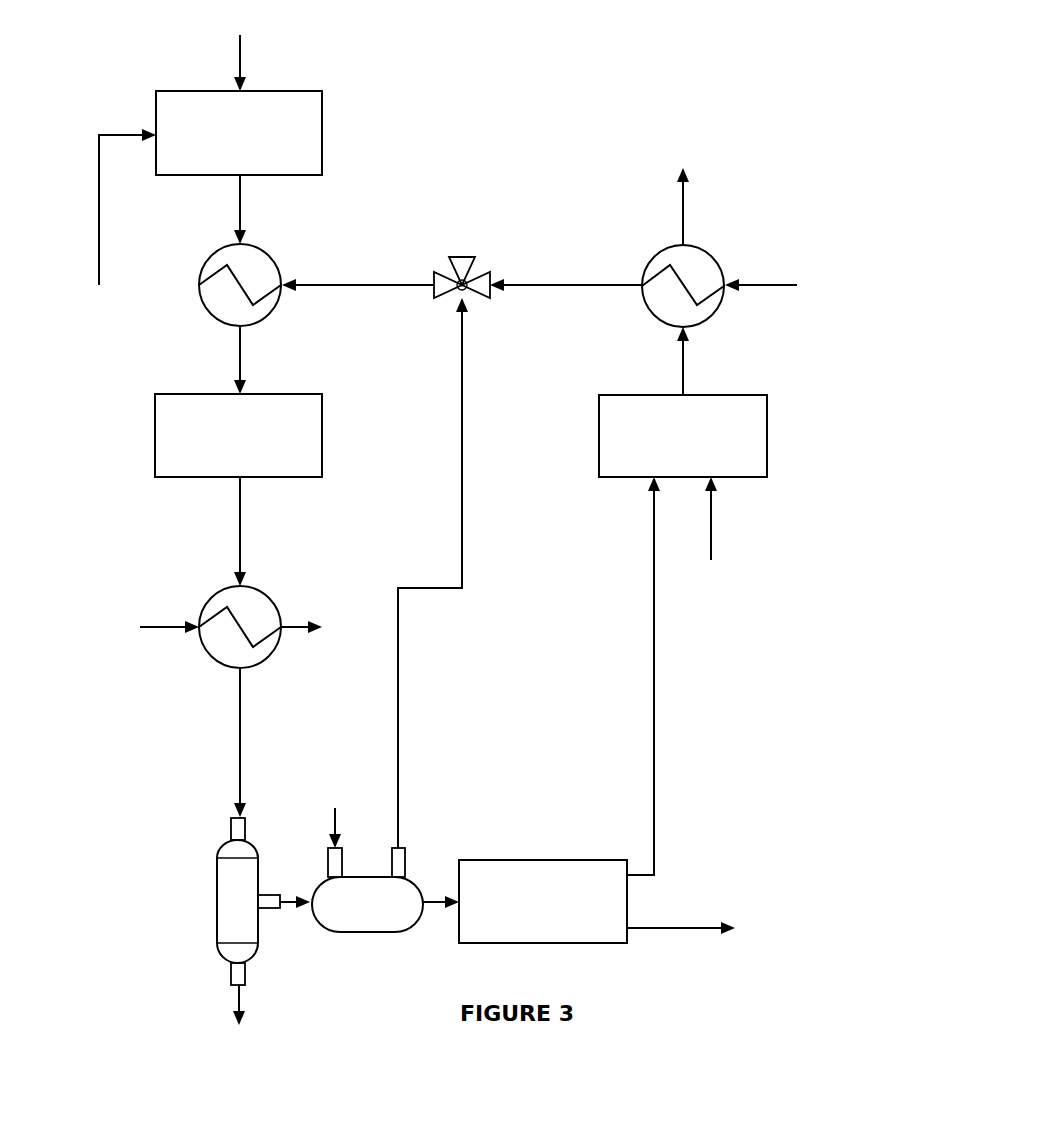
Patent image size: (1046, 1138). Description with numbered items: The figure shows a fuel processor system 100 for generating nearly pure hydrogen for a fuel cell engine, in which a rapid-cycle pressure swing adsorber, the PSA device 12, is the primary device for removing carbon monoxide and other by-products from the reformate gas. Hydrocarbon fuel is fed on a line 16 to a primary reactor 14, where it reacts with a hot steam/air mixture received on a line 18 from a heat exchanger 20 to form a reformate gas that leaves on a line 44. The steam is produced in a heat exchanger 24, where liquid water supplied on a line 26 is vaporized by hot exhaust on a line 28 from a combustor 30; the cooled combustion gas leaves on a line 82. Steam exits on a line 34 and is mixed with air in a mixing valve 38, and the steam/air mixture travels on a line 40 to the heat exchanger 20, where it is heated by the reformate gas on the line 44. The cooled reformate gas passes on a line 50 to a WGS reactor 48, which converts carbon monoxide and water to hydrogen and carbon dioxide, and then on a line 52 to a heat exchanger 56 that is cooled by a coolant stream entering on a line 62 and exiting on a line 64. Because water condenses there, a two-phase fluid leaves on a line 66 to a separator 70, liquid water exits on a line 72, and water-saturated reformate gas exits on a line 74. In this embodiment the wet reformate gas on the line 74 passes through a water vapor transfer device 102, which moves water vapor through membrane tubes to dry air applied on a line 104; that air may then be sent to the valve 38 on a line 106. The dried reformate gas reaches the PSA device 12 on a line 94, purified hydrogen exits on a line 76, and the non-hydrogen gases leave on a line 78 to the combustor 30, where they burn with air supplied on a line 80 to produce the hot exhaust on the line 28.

The fuel processor system 100 is at (466, 104).
The pressure swing adsorber (PSA) device 12 is at (516, 860).
The primary reactor 14 is at (322, 115).
The line 16 is at (240, 49).
The line 18 is at (99, 205).
The heat exchanger 20 is at (212, 318).
The heat exchanger 24 is at (663, 247).
The line 26 is at (763, 285).
The line 28 is at (683, 360).
The combustor 30 is at (599, 440).
The line 34 is at (543, 285).
The mixing valve 38 is at (458, 257).
The line 40 is at (350, 285).
The line 44 is at (240, 198).
The WGS reactor 48 is at (322, 435).
The line 50 is at (240, 359).
The line 52 is at (240, 505).
The heat exchanger 56 is at (210, 595).
The line 62 is at (152, 628).
The line 64 is at (283, 632).
The line 66 is at (239, 742).
The separator 70 is at (217, 908).
The line 72 is at (239, 1003).
The line 74 is at (284, 905).
The line 76 is at (680, 928).
The line 78 is at (652, 688).
The line 80 is at (711, 525).
The line 82 is at (683, 210).
The line 94 is at (428, 895).
The water vapor transfer (WVT) device 102 is at (355, 932).
The line 104 is at (333, 816).
The line 106 is at (470, 447).